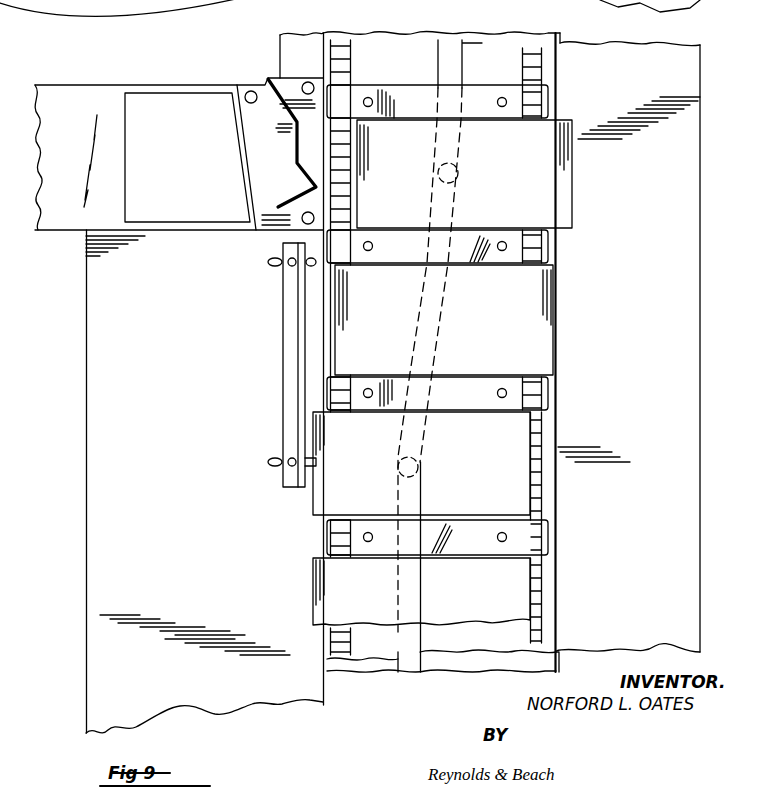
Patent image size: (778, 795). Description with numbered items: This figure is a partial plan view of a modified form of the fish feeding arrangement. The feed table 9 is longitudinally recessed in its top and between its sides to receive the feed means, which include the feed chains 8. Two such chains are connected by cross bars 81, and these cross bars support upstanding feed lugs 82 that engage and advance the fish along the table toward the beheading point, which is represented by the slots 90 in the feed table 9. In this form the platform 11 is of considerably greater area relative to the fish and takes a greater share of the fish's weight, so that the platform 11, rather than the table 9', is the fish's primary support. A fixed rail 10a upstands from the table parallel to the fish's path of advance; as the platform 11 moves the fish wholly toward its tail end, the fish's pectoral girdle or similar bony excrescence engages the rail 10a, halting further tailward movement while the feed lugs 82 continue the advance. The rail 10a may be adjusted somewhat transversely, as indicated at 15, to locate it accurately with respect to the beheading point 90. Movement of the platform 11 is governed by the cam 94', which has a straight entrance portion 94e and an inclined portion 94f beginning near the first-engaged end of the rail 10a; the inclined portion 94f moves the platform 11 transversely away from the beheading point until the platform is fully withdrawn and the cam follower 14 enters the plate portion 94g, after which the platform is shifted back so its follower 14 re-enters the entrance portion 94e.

The feed chains 8 is at (338, 202).
The feed table 9 is at (185, 481).
The table 9' is at (643, 342).
The fixed rail 10a is at (287, 383).
The platform 11 is at (565, 180).
The cam follower 14 is at (400, 481).
The transverse adjustment 15 is at (290, 266).
The cross bars 81 is at (396, 92).
The feed lugs 82 is at (530, 90).
The slots 90 is at (278, 202).
The cam 94' is at (441, 595).
The straight entrance portion 94e is at (407, 657).
The inclined portion 94f is at (440, 326).
The plate portion 94g is at (463, 33).